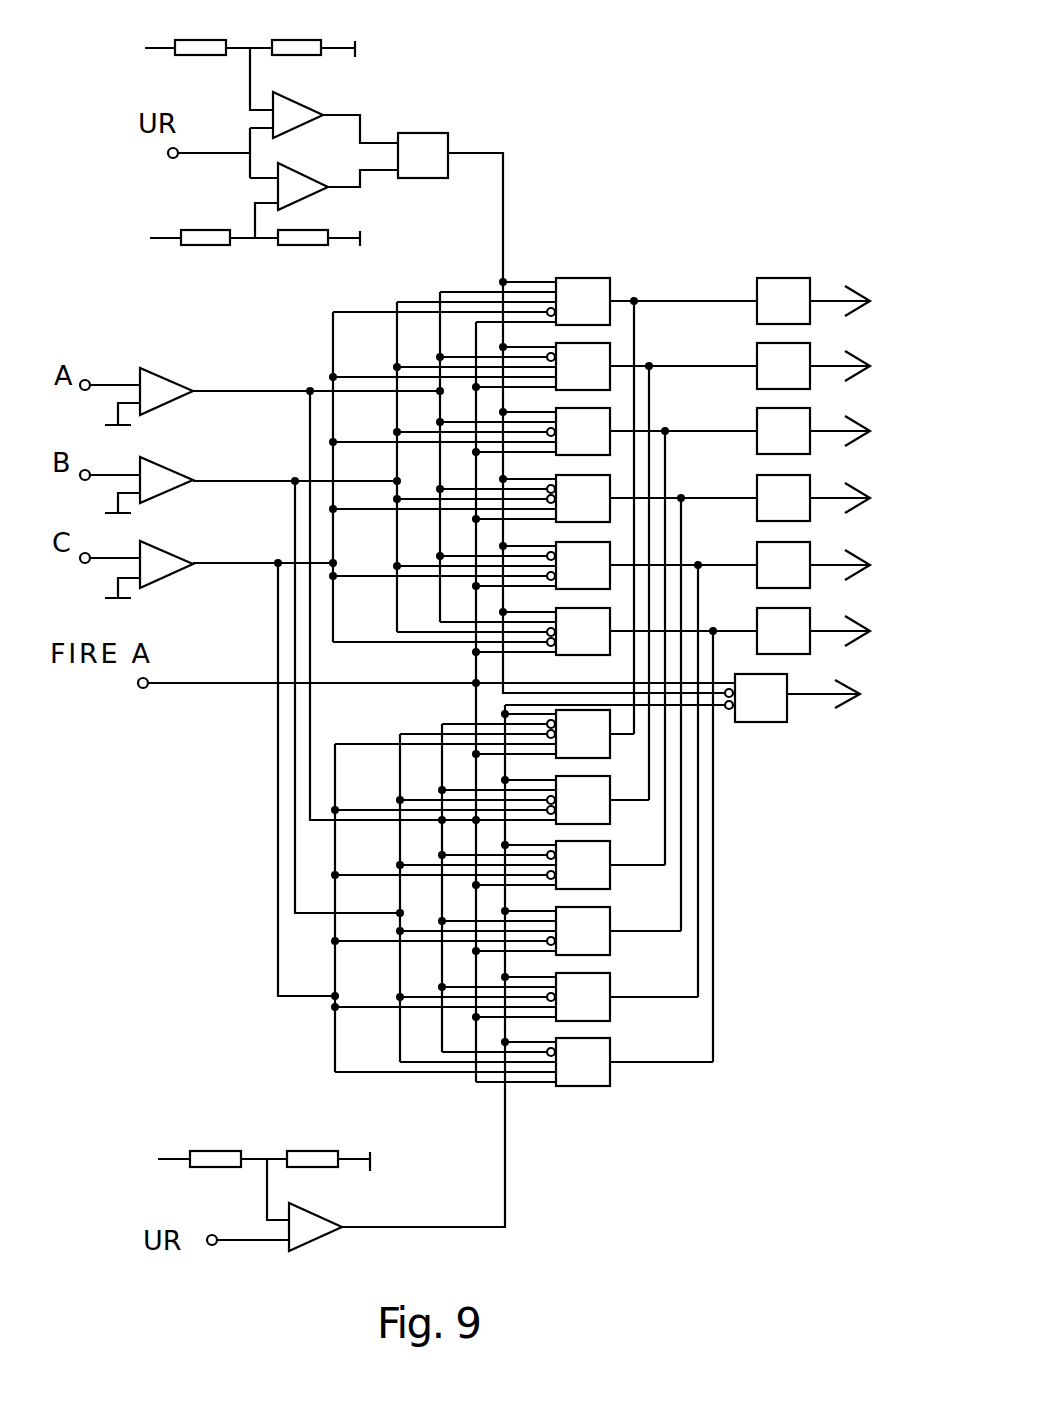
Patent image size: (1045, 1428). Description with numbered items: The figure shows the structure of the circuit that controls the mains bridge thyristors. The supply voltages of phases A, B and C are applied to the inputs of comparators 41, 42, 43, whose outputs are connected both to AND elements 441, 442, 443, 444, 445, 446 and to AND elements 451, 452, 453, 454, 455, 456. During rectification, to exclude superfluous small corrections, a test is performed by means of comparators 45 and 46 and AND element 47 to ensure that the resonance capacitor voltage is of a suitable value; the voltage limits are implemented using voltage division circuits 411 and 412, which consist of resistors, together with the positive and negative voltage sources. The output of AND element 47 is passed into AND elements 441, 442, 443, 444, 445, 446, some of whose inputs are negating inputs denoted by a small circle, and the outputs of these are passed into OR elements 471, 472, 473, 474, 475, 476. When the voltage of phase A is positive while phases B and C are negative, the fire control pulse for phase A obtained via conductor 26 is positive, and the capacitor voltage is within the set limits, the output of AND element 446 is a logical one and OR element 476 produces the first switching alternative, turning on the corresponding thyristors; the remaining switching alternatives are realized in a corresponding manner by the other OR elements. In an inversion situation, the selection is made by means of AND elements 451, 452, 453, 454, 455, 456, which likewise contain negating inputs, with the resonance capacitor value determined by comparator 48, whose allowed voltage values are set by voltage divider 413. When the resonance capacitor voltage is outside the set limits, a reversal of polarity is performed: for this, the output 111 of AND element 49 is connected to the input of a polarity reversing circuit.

The voltage division circuit 411 is at (257, 33).
The voltage division circuit 412 is at (250, 250).
The voltage divider 413 is at (262, 1141).
The comparator 41 is at (175, 379).
The comparator 42 is at (178, 465).
The comparator 43 is at (178, 548).
The comparator 45 is at (295, 95).
The comparator 46 is at (308, 200).
The AND element 47 is at (410, 130).
The comparator 48 is at (318, 1208).
The AND element 49 is at (780, 723).
The conductor 26 is at (212, 686).
The output of AND element 49 111 is at (830, 695).
The AND element 441 is at (610, 293).
The AND element 442 is at (610, 360).
The AND element 443 is at (610, 425).
The AND element 444 is at (610, 497).
The AND element 445 is at (610, 557).
The AND element 446 is at (610, 624).
The AND element 451 is at (610, 747).
The AND element 452 is at (610, 812).
The AND element 453 is at (612, 878).
The AND element 454 is at (612, 948).
The AND element 455 is at (612, 985).
The AND element 456 is at (612, 1050).
The OR element 471 is at (810, 282).
The OR element 472 is at (810, 352).
The OR element 473 is at (810, 420).
The OR element 474 is at (811, 490).
The OR element 475 is at (811, 555).
The OR element 476 is at (811, 620).